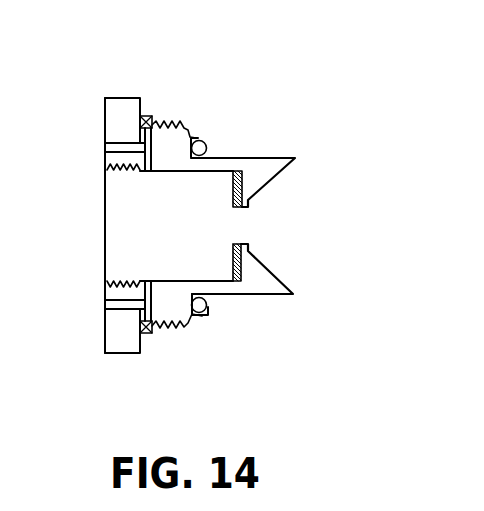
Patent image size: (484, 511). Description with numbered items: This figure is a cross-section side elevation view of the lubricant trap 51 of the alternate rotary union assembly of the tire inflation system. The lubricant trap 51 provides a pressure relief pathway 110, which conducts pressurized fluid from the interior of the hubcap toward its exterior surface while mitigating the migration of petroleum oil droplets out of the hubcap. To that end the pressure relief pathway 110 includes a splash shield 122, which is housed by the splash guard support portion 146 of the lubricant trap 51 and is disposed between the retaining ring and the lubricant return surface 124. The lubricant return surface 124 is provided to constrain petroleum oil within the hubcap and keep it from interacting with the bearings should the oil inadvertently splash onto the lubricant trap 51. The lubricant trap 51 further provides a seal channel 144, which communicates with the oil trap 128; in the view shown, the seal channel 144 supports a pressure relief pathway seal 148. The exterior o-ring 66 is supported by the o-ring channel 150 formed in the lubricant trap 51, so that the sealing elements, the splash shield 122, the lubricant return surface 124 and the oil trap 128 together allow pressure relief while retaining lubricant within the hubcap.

The lubricant trap 51 is at (244, 68).
The pressure relief pathway 110 is at (108, 144).
The o-ring channel 150 is at (192, 147).
The exterior o-ring 66 is at (206, 146).
The splash guard support portion 146 is at (265, 166).
The splash shield 122 is at (248, 207).
The lubricant return surface 124 is at (273, 273).
The oil trap 128 is at (157, 322).
The seal channel 144 is at (139, 323).
The pressure relief pathway seal 148 is at (148, 334).